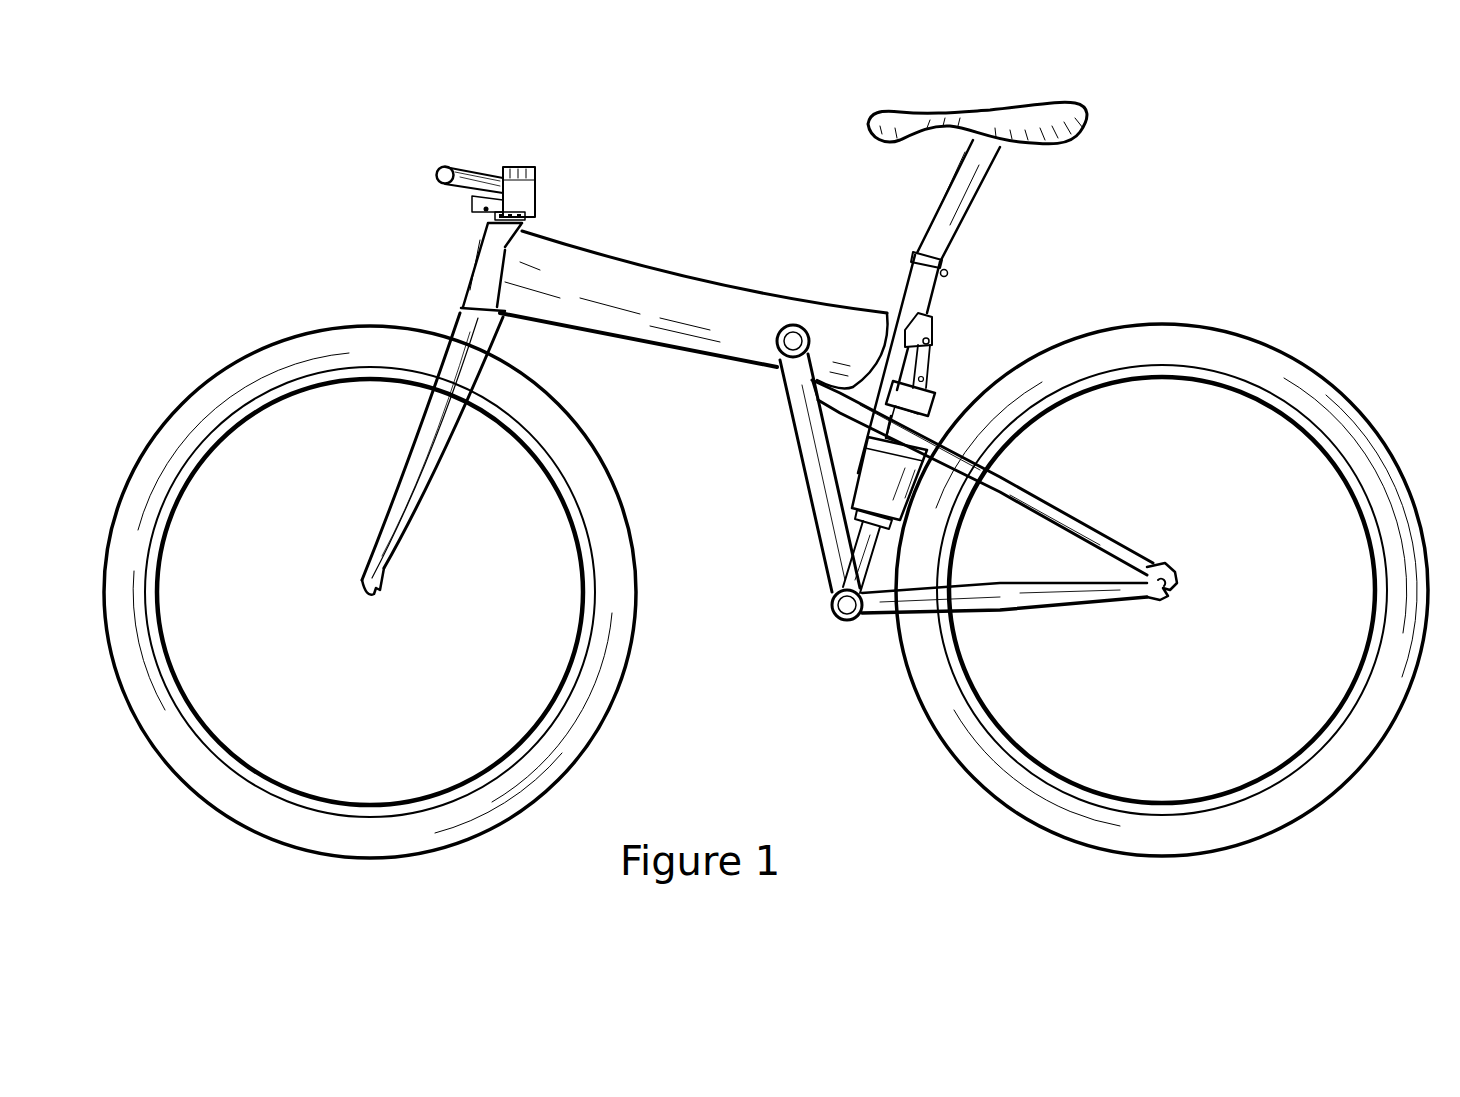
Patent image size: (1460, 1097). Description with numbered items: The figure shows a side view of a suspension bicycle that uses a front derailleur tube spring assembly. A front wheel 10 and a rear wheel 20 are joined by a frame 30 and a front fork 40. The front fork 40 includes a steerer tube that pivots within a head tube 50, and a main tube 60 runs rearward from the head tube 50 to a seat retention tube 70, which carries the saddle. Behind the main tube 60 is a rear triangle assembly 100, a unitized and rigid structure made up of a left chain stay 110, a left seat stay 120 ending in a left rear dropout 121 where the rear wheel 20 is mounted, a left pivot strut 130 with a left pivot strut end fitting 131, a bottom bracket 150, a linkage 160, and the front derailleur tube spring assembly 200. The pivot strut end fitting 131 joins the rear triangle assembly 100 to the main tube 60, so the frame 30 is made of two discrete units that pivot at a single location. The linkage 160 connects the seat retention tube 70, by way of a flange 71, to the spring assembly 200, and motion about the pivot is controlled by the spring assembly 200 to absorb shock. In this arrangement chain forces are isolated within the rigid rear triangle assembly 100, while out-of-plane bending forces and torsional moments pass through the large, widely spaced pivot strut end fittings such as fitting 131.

The front wheel 10 is at (205, 408).
The rear wheel 20 is at (1201, 350).
The frame 30 is at (728, 258).
The front fork 40 is at (462, 362).
The head tube 50 is at (490, 257).
The main tube 60 is at (620, 280).
The seat retention tube 70 is at (918, 267).
The flange 71 is at (920, 330).
The rear triangle assembly 100 is at (785, 508).
The left chain stay 110 is at (1003, 593).
The left seat stay 120 is at (1063, 517).
The left rear dropout 121 is at (1160, 573).
The left pivot strut 130 is at (803, 436).
The left pivot strut end fitting 131 is at (782, 362).
The bottom bracket 150 is at (830, 612).
The linkage 160 is at (928, 347).
The front derailleur tube spring assembly 200 is at (940, 407).